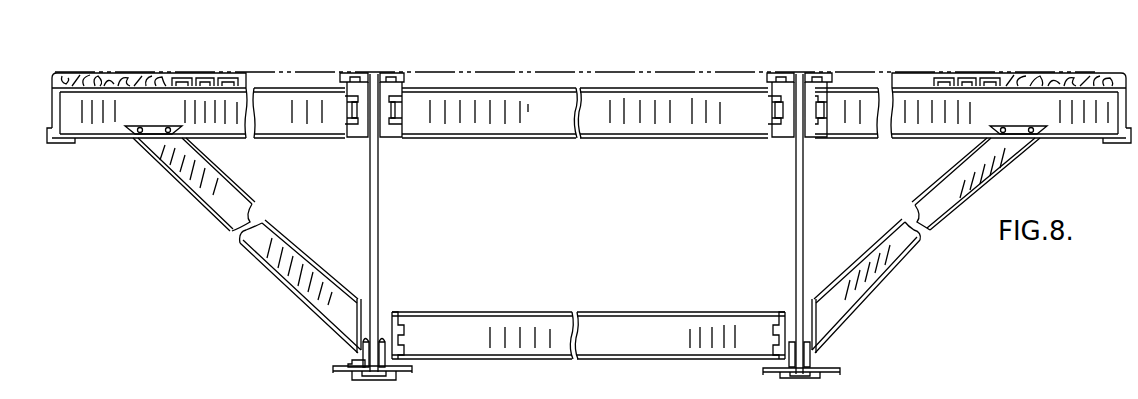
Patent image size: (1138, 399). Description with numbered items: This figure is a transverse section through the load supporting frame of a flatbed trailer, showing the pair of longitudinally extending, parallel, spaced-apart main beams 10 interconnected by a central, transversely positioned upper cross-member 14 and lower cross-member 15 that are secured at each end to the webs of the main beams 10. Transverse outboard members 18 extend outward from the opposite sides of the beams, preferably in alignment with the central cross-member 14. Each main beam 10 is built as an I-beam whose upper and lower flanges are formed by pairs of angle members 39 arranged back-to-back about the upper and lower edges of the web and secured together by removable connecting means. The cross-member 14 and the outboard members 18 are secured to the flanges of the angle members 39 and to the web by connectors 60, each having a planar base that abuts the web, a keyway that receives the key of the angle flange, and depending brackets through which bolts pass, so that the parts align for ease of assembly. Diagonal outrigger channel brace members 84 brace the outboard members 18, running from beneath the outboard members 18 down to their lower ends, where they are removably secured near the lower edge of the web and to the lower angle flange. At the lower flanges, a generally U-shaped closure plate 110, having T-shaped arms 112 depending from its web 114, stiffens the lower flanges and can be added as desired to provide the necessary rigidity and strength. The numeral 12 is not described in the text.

The main beam 10 is at (420, 238).
The right panel frame 12 is at (773, 236).
The upper cross-member 14 is at (673, 88).
The lower cross-member 15 is at (618, 312).
The transverse outboard member 18 is at (298, 88).
The angle member 39 is at (368, 76).
The connector 60 is at (360, 108).
The diagonal outrigger channel brace member 84 is at (267, 270).
The closure plate 110 is at (377, 381).
The T-shaped arm 112 is at (352, 363).
The web 114 is at (388, 380).